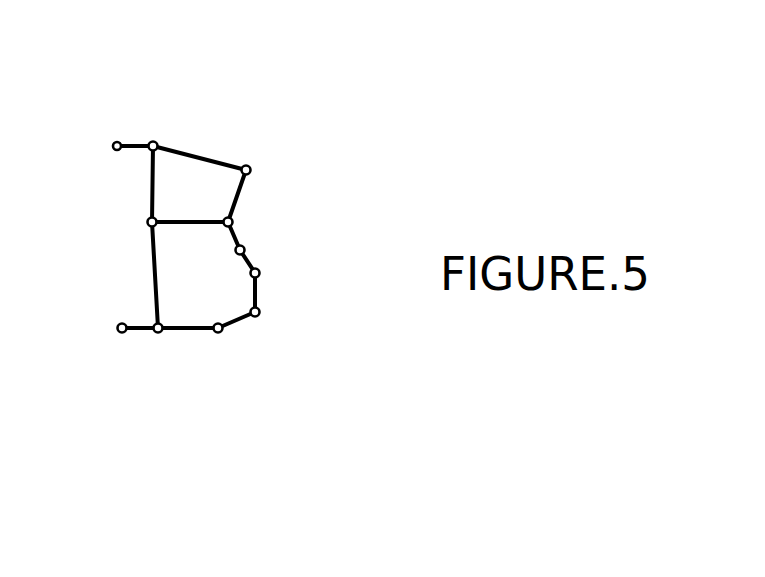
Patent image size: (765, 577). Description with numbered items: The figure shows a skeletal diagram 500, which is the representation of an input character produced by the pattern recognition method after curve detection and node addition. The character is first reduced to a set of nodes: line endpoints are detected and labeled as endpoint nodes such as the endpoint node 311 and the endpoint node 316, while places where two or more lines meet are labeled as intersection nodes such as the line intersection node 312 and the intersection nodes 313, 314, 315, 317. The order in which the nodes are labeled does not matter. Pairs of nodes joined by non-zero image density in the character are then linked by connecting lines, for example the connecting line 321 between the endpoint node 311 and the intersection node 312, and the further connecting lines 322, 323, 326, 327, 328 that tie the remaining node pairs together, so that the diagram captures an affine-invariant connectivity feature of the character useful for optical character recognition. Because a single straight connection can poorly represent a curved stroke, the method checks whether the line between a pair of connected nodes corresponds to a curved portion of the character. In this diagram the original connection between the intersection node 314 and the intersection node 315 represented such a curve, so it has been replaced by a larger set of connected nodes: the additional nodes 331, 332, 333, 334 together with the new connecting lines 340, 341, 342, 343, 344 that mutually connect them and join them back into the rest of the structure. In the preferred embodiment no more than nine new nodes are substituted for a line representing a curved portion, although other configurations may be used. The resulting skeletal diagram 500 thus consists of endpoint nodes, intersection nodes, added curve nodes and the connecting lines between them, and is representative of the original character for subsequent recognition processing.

The line endpoint node 311 is at (112, 146).
The line intersection node 312 is at (156, 142).
The intersection node 313 is at (252, 170).
The intersection node 314 is at (234, 223).
The intersection node 315 is at (157, 334).
The endpoint node 316 is at (118, 327).
The intersection node 317 is at (148, 222).
The connecting line 321 is at (135, 146).
The connecting line 322 is at (202, 158).
The connecting line 323 is at (242, 192).
The connecting line 326 is at (140, 330).
The connecting line 327 is at (152, 283).
The connecting line 328 is at (152, 186).
The additional node 331 is at (240, 250).
The additional node 332 is at (258, 278).
The additional node 333 is at (258, 316).
The additional node 334 is at (220, 334).
The connecting line 340 is at (236, 237).
The connecting line 341 is at (246, 259).
The connecting line 342 is at (257, 297).
The connecting line 343 is at (233, 322).
The connecting line 344 is at (178, 331).
The skeletal diagram 500 is at (264, 295).